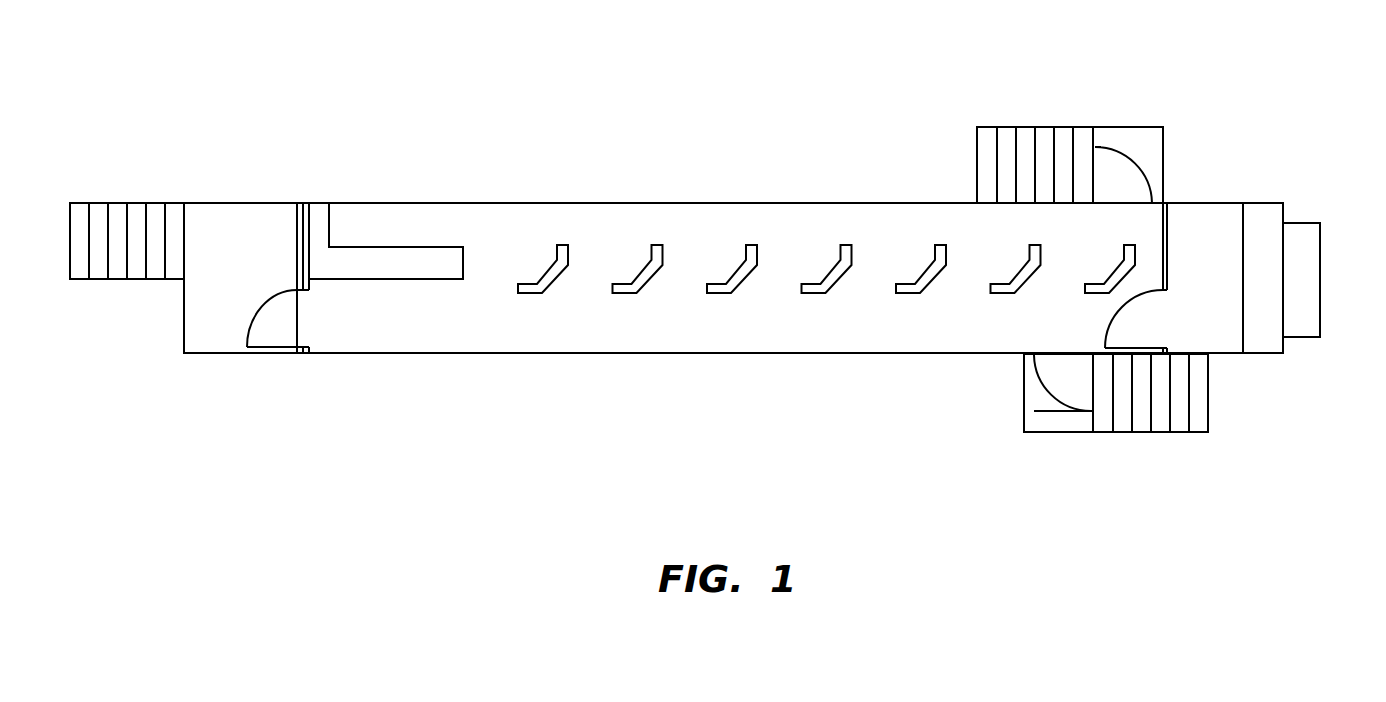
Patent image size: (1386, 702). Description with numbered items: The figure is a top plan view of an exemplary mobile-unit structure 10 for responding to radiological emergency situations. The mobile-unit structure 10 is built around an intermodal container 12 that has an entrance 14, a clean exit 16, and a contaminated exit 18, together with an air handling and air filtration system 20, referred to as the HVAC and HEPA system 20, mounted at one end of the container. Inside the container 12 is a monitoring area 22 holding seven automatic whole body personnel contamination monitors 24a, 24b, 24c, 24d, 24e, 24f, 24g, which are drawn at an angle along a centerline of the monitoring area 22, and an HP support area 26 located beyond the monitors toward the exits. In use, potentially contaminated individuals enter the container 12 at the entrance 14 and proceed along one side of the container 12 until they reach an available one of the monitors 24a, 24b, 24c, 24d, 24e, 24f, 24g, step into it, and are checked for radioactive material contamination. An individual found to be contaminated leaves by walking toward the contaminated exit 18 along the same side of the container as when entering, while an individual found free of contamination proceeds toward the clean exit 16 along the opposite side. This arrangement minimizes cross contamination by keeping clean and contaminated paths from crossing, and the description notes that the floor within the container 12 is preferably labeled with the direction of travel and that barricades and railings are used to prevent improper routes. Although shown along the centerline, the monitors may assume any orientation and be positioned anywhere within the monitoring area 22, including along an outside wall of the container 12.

The mobile-unit structure 10 is at (250, 120).
The intermodal container 12 is at (623, 203).
The entrance 14 is at (297, 323).
The clean exit 16 is at (1152, 127).
The contaminated exit 18 is at (1024, 432).
The air handling (HVAC) and air filtration (HEPA) system 20 is at (1320, 278).
The monitoring area 22 is at (588, 307).
The automatic whole body personnel contamination monitor 24a is at (565, 244).
The automatic whole body personnel contamination monitor 24b is at (646, 288).
The automatic whole body personnel contamination monitor 24c is at (750, 244).
The automatic whole body personnel contamination monitor 24d is at (843, 244).
The automatic whole body personnel contamination monitor 24e is at (907, 293).
The automatic whole body personnel contamination monitor 24f is at (1015, 270).
The automatic whole body personnel contamination monitor 24g is at (1093, 293).
The HP support area 26 is at (1222, 332).